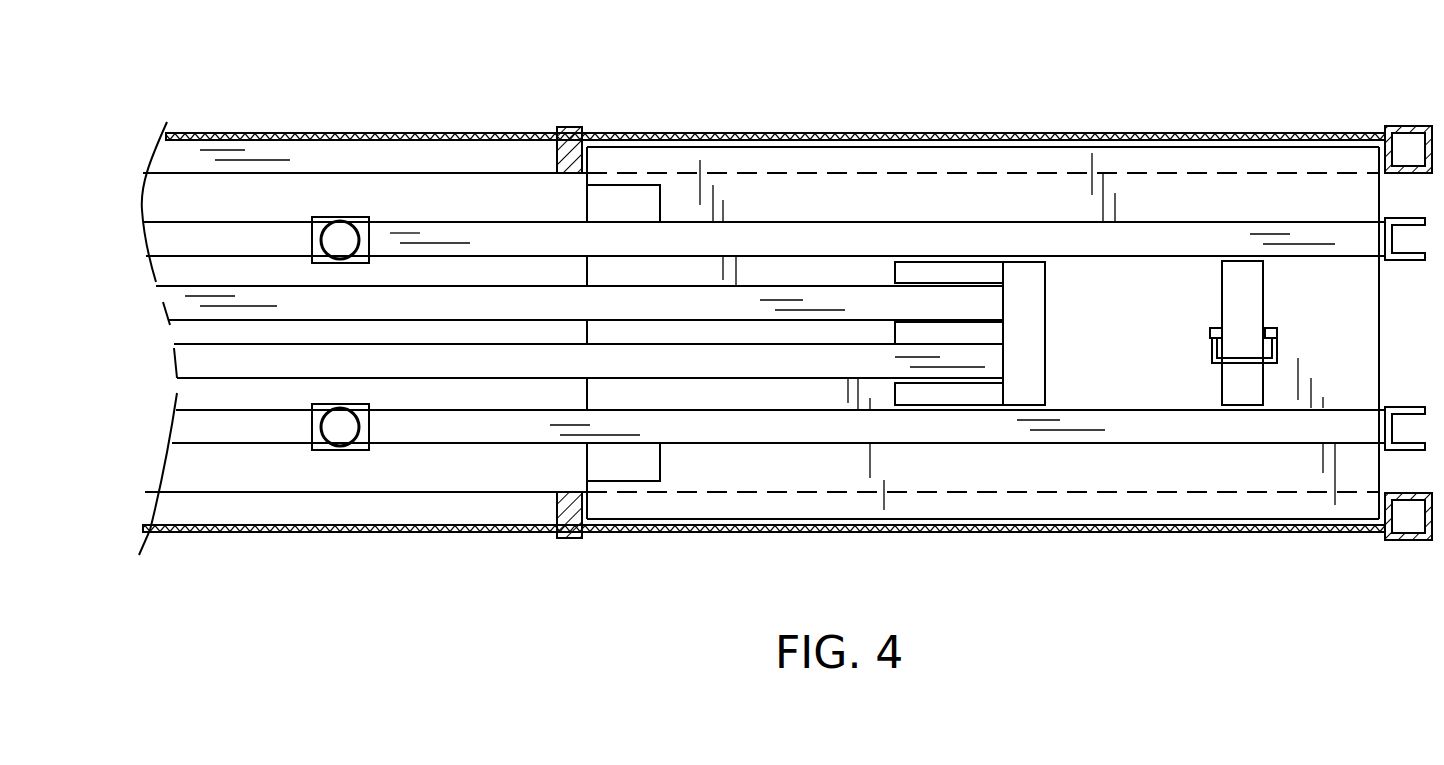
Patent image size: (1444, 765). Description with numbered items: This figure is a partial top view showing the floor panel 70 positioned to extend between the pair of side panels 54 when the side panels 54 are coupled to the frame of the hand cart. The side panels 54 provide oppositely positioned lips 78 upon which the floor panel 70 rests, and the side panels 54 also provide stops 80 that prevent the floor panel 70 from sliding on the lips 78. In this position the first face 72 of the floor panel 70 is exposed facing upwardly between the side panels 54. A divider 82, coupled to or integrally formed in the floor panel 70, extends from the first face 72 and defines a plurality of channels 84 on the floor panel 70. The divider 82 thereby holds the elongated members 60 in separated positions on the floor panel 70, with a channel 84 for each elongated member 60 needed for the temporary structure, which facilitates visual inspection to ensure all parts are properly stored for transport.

The side panel 54 is at (497, 153).
The elongated member 60 is at (264, 303).
The floor panel 70 is at (997, 180).
The first face 72 is at (1347, 307).
The lip 78 is at (1163, 525).
The stop 80 is at (571, 127).
The divider 82 is at (1033, 330).
The channel 84 is at (905, 330).